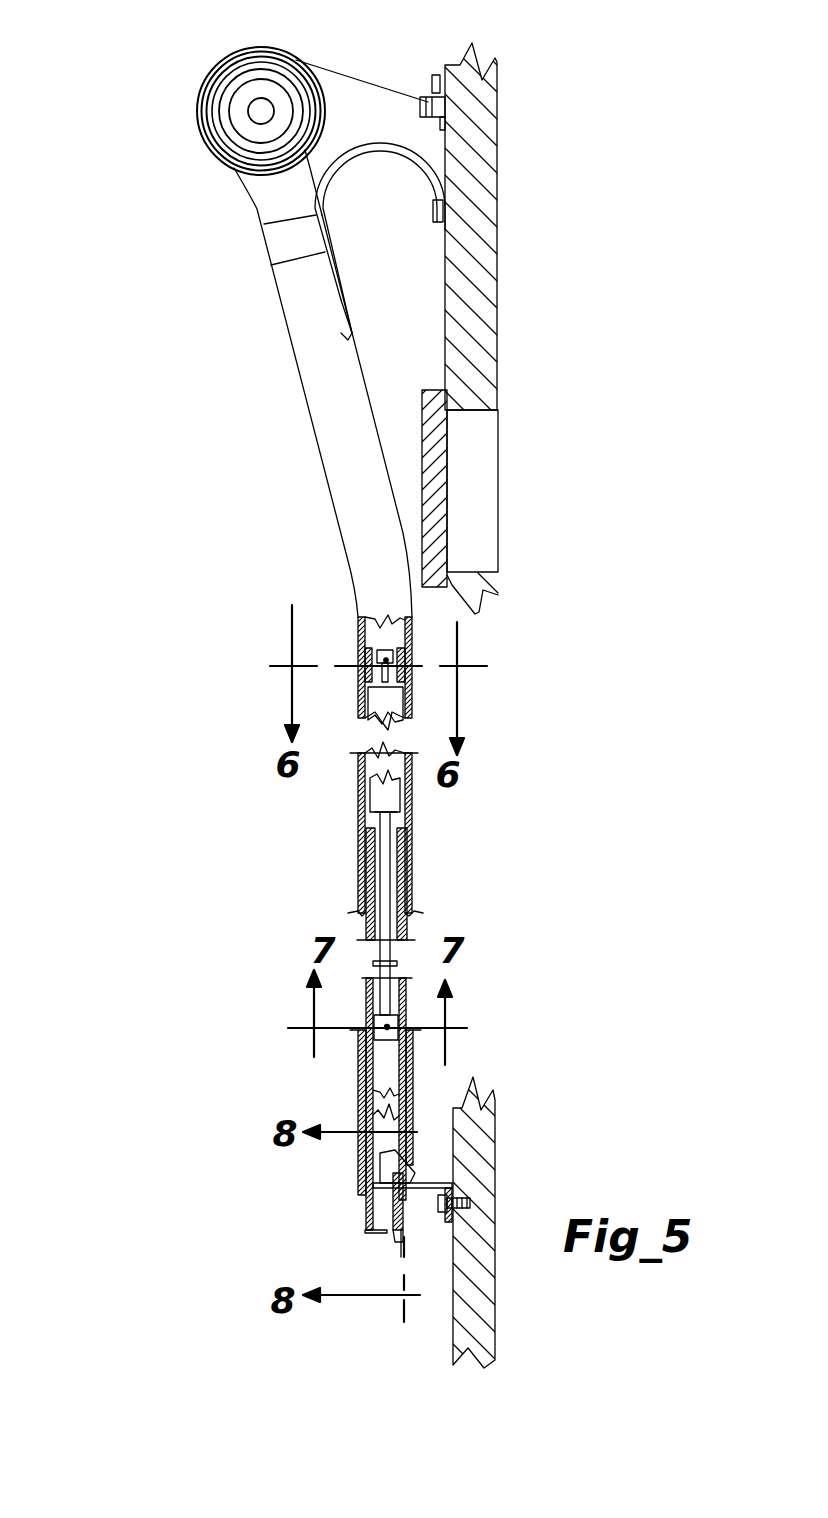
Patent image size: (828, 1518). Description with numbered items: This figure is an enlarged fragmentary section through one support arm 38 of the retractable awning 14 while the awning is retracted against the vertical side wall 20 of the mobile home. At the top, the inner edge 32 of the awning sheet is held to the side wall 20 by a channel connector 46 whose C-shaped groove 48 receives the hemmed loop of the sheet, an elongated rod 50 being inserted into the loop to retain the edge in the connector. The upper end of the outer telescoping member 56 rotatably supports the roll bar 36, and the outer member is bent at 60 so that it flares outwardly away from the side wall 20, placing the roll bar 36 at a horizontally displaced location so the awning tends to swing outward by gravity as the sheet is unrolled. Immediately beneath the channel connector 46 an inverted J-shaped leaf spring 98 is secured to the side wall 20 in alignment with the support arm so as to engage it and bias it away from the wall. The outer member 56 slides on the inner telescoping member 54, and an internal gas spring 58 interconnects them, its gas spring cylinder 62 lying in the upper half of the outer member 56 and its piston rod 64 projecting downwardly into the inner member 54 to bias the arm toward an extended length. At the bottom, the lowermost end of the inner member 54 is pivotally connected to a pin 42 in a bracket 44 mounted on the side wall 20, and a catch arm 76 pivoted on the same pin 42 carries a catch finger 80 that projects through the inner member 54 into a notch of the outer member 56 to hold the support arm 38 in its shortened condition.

The retractable awning 14 is at (271, 474).
The side wall 20 is at (445, 283).
The inner edge 32 is at (393, 90).
The roll bar 36 is at (243, 110).
The support arms 38 is at (370, 828).
The pins 42 is at (372, 1213).
The brackets 44 is at (423, 1212).
The channel connector 46 is at (433, 110).
The groove 48 is at (418, 117).
The elongated rod 50 is at (437, 100).
The inner telescoping member 54 is at (367, 987).
The outer telescoping member 56 is at (413, 863).
The gas spring 58 is at (388, 790).
The bend 60 is at (367, 563).
The gas spring cylinder 62 is at (365, 800).
The piston rod 64 is at (392, 925).
The catch arm 76 is at (390, 1183).
The catch finger 80 is at (417, 1170).
The leaf spring 98 is at (348, 170).